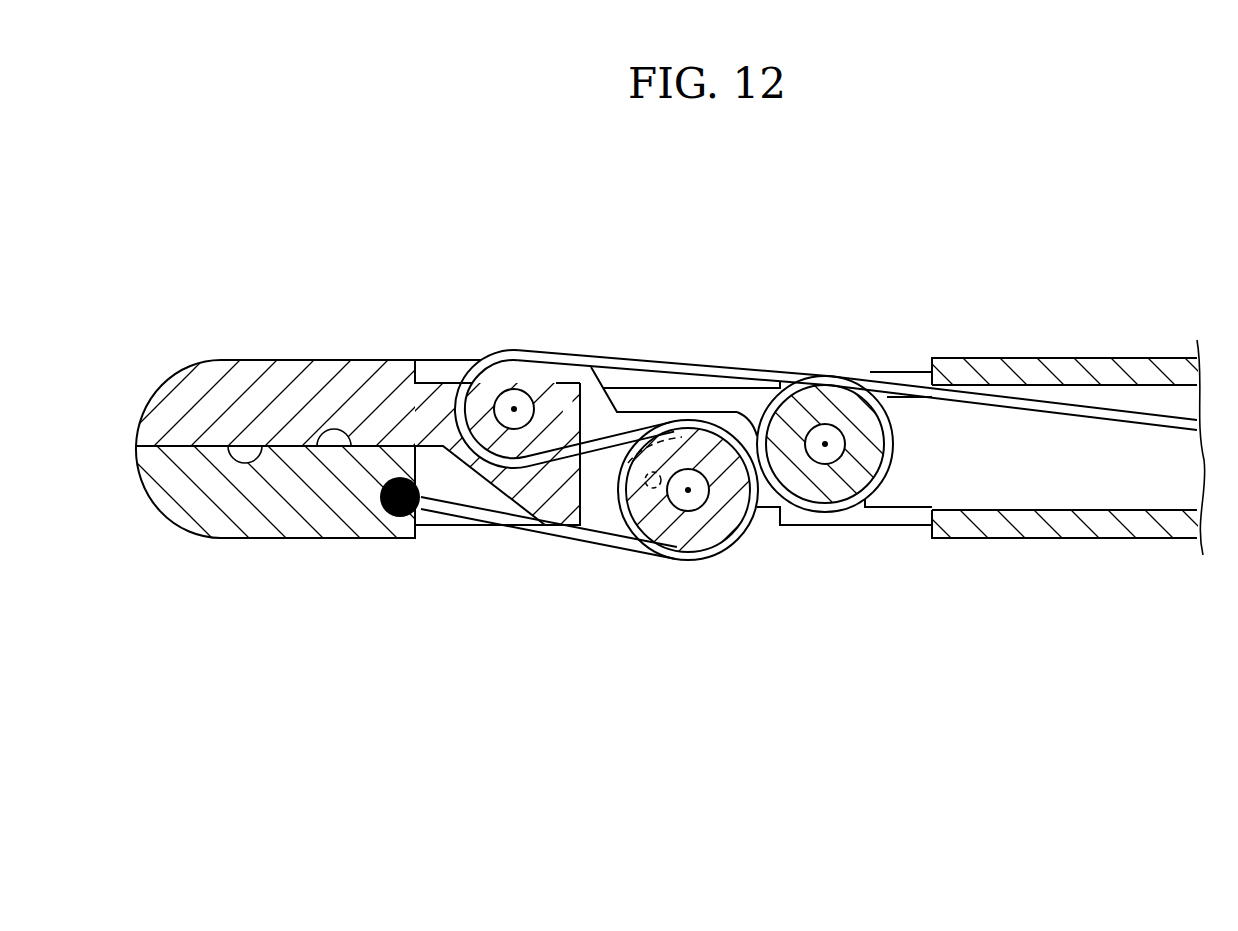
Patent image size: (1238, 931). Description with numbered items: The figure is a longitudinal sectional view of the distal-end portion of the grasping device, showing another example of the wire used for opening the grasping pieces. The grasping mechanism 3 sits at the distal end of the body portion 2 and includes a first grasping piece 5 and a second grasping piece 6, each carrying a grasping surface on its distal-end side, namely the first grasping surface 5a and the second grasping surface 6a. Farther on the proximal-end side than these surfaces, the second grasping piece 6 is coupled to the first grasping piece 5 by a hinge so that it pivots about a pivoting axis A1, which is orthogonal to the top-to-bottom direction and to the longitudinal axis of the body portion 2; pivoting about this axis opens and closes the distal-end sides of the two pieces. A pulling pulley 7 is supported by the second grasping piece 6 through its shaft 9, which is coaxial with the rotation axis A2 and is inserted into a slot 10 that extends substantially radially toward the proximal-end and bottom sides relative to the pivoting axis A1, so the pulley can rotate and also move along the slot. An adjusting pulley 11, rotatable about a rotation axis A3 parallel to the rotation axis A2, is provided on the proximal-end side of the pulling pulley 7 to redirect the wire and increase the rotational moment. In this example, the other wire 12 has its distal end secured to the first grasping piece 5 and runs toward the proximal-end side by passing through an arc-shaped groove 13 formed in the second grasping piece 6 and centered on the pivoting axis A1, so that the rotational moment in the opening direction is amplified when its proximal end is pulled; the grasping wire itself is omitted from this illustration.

The body portion 2 is at (1090, 358).
The grasping mechanism 3 is at (143, 251).
The first grasping piece 5 is at (258, 539).
The first grasping surface 5a is at (326, 430).
The second grasping piece 6 is at (313, 360).
The second grasping surface 6a is at (261, 447).
The pulling pulley 7 is at (741, 535).
The shaft 9 is at (688, 512).
The slot 10 is at (652, 488).
The adjusting pulley 11 is at (894, 447).
The other wire 12 is at (902, 374).
The arc-shaped groove 13 is at (462, 404).
The pivoting axis A1 is at (514, 406).
The rotation axis A2 is at (689, 487).
The rotation axis A3 is at (826, 441).